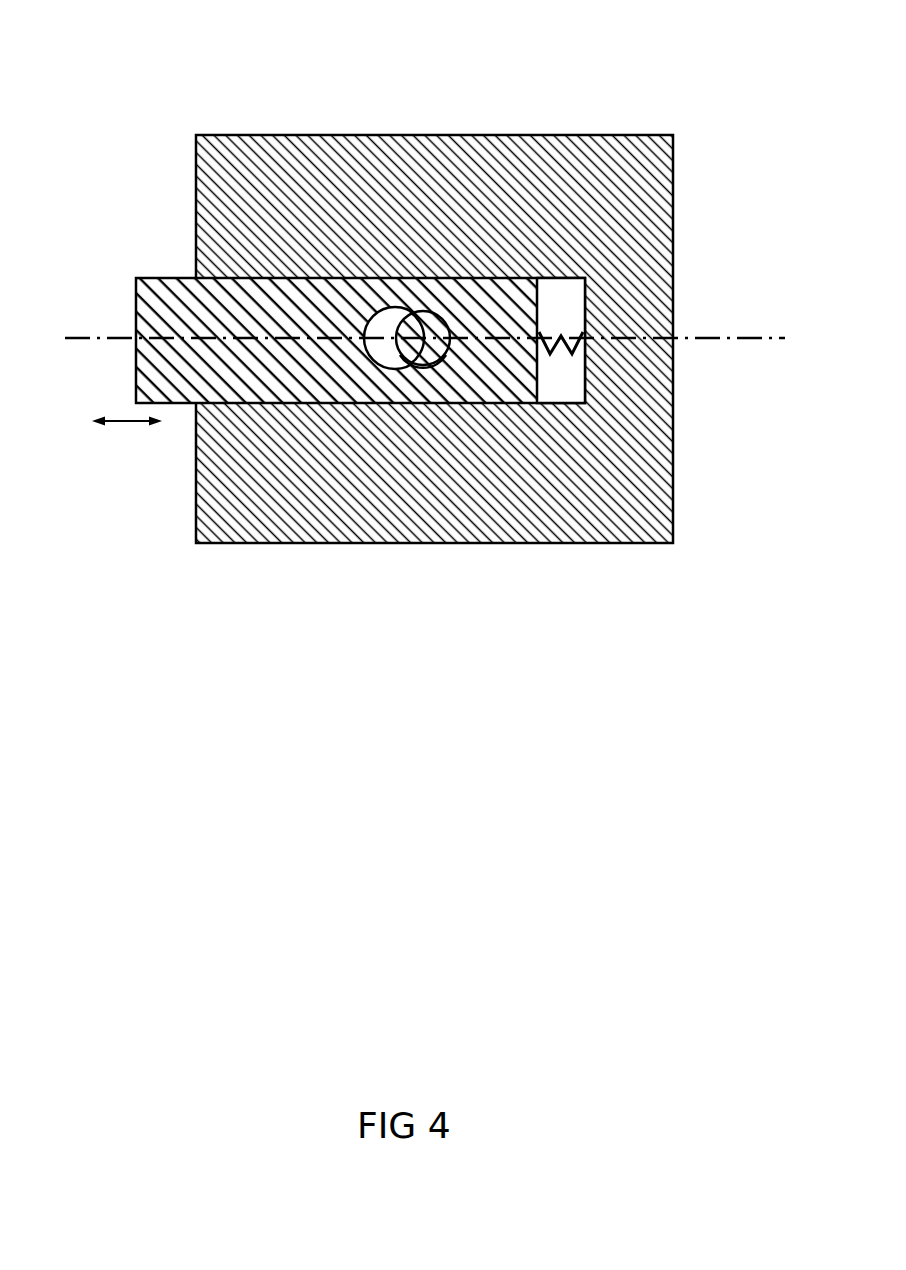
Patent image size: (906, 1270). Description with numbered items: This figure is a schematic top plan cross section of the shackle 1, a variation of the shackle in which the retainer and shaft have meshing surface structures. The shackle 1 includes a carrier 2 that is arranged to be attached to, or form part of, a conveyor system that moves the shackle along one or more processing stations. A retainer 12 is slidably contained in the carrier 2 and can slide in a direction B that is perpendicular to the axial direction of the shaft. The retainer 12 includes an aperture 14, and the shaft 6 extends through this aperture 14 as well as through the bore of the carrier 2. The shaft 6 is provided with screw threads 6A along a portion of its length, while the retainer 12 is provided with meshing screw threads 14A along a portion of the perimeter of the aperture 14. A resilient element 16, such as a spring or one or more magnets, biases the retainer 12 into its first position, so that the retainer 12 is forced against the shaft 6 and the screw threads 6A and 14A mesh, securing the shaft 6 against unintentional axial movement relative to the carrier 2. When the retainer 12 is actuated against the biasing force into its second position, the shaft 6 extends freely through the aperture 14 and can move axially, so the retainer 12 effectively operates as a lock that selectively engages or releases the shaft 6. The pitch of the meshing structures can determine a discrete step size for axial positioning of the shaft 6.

The shackle 1 is at (413, 298).
The carrier 2 is at (218, 124).
The retainer 12 is at (126, 300).
The aperture 14 is at (383, 308).
The meshing screw threads 14A is at (452, 326).
The shaft 6 is at (431, 321).
The screw threads 6A is at (405, 366).
The resilient element 16 is at (582, 325).
The direction B is at (132, 436).